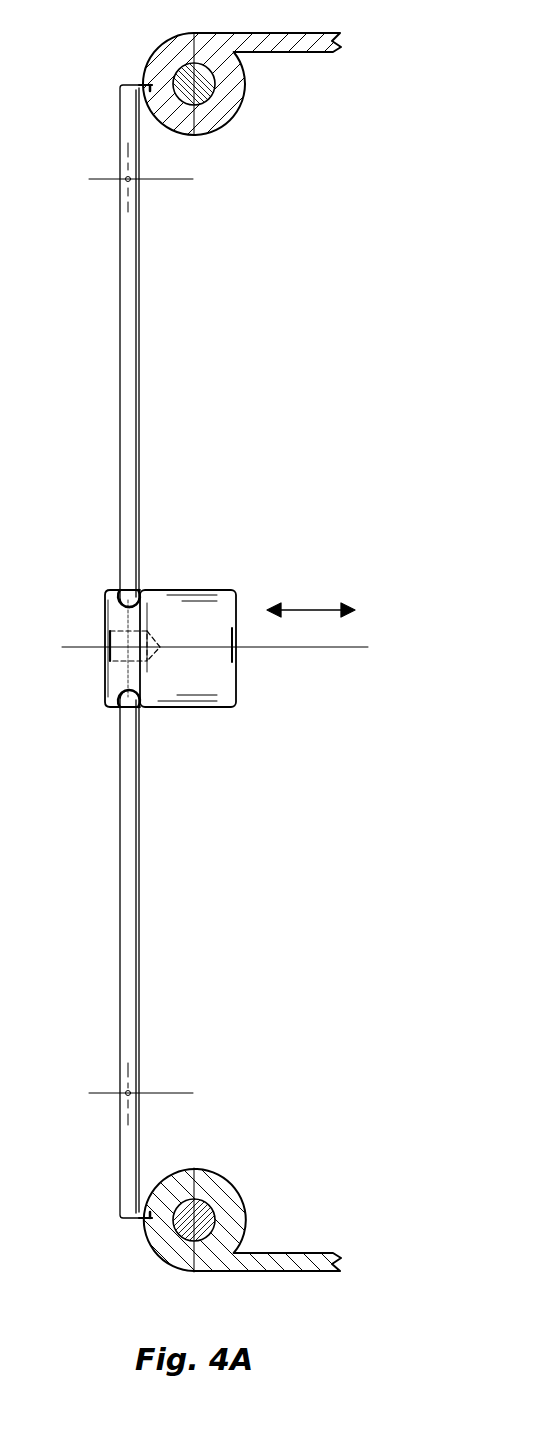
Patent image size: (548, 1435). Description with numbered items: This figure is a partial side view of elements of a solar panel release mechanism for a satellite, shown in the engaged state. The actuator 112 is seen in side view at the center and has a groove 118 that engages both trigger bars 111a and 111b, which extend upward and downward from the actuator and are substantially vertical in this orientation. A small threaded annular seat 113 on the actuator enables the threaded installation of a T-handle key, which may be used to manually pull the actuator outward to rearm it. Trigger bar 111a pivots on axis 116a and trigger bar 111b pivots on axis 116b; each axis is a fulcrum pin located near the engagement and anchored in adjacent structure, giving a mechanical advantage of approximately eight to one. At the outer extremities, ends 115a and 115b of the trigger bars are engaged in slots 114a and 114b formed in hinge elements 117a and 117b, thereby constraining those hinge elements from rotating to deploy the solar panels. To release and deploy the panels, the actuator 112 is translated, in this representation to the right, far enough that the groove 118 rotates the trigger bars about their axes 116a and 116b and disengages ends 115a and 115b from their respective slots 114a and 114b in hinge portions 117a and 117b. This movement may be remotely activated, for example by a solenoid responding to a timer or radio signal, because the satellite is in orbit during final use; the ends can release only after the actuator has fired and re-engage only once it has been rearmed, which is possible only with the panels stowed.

The trigger bar 111a is at (126, 292).
The trigger bar 111b is at (126, 896).
The actuator 112 is at (197, 590).
The threaded annular seat 113 is at (106, 640).
The slot 114a is at (148, 82).
The slot 114b is at (148, 1238).
The end 115a is at (143, 84).
The end 115b is at (144, 1223).
The axis 116a is at (119, 180).
The axis 116b is at (118, 1094).
The hinge element 117a is at (244, 96).
The hinge element 117b is at (222, 1179).
The groove 118 is at (123, 688).